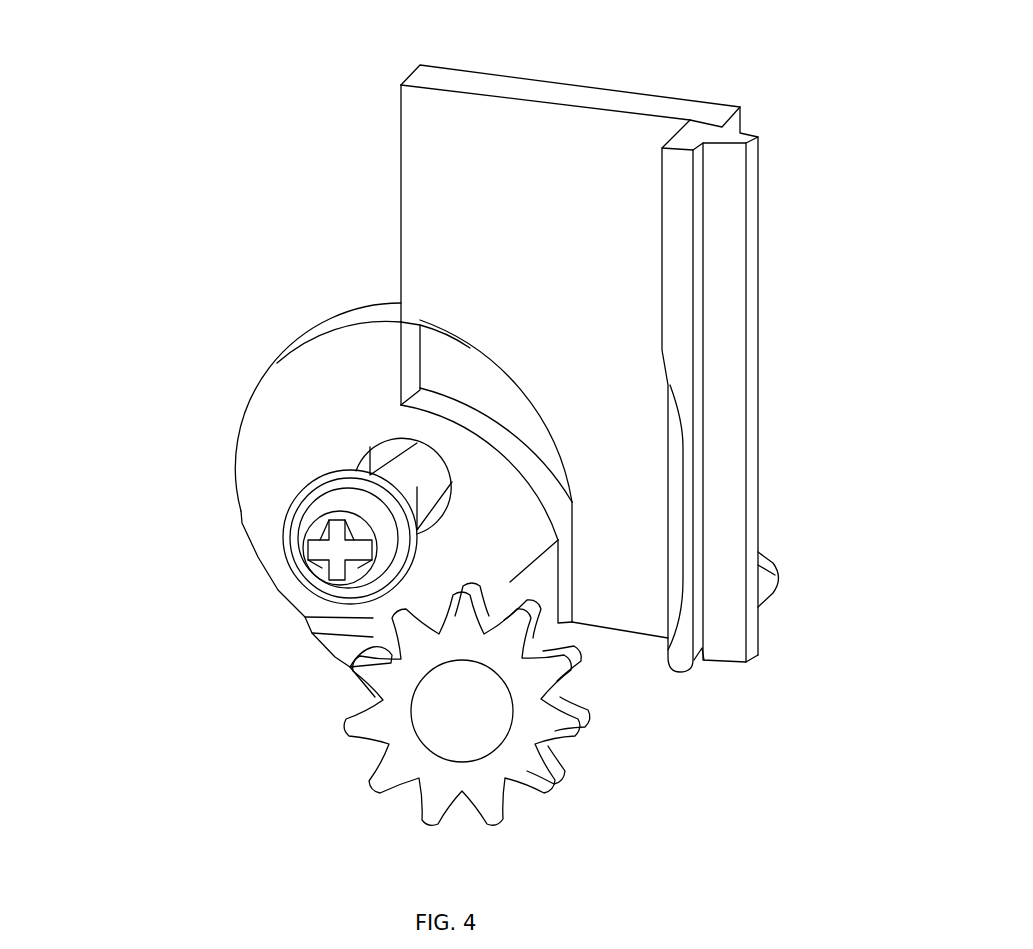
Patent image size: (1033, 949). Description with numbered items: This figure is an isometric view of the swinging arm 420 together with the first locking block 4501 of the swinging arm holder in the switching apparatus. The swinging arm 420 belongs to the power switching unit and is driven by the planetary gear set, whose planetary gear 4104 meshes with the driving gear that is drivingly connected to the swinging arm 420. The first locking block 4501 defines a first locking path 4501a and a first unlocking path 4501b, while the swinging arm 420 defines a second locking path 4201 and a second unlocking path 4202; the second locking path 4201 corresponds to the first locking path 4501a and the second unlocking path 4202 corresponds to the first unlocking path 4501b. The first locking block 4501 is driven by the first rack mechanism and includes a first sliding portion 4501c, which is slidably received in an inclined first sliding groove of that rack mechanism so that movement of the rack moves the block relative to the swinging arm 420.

The first locking block 4501 is at (670, 108).
The first locking path 4501a is at (398, 193).
The first unlocking path 4501b is at (509, 370).
The first sliding portion 4501c is at (783, 578).
The swinging arm 420 is at (258, 552).
The second locking path 4201 is at (420, 377).
The second unlocking path 4202 is at (345, 313).
The planetary gear 4104 is at (430, 797).